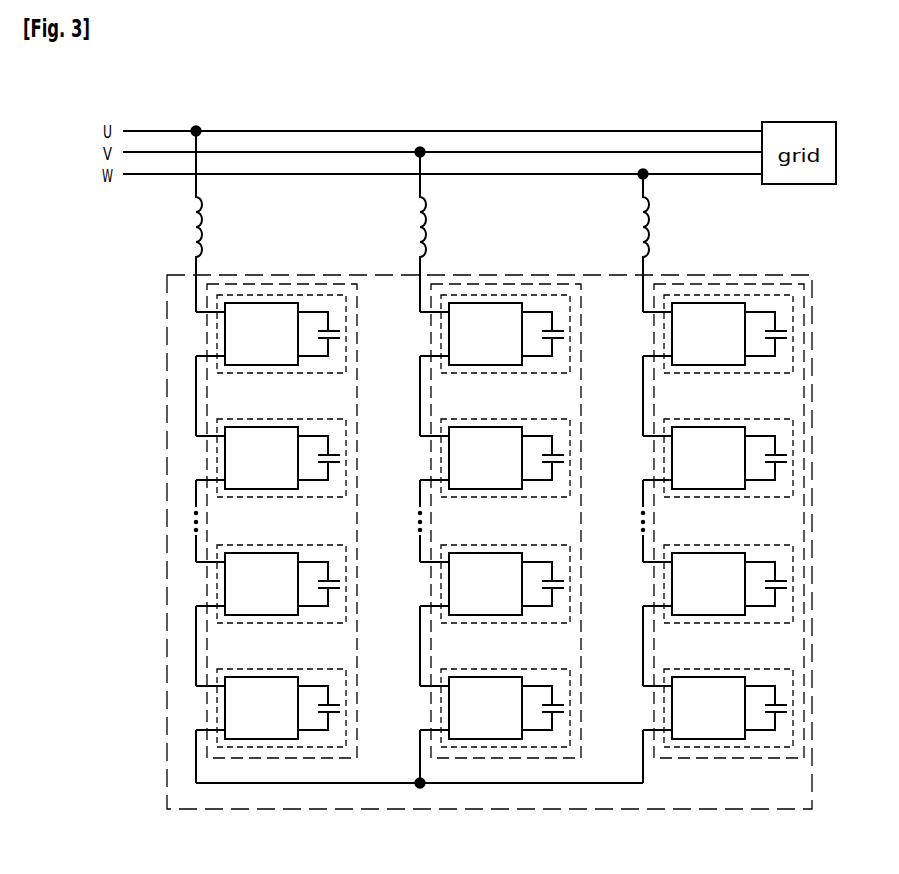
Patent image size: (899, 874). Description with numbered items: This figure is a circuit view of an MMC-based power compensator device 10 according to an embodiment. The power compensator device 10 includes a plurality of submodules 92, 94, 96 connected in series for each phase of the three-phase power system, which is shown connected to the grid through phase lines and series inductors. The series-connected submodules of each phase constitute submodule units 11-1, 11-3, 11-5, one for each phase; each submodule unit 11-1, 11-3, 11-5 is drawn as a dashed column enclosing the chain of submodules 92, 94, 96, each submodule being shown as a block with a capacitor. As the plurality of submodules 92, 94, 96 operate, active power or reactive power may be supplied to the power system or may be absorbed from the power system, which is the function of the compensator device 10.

The MMC-based power compensator device 10 is at (813, 307).
The submodule unit 11-1 is at (275, 492).
The submodule unit 11-3 is at (499, 503).
The submodule unit 11-5 is at (722, 514).
The submodule 92 is at (239, 748).
The submodule 94 is at (462, 748).
The submodule 96 is at (685, 748).